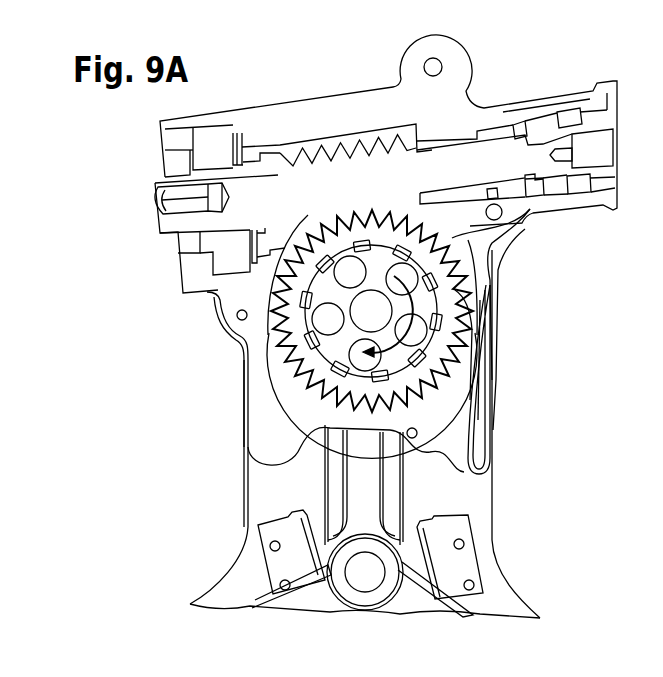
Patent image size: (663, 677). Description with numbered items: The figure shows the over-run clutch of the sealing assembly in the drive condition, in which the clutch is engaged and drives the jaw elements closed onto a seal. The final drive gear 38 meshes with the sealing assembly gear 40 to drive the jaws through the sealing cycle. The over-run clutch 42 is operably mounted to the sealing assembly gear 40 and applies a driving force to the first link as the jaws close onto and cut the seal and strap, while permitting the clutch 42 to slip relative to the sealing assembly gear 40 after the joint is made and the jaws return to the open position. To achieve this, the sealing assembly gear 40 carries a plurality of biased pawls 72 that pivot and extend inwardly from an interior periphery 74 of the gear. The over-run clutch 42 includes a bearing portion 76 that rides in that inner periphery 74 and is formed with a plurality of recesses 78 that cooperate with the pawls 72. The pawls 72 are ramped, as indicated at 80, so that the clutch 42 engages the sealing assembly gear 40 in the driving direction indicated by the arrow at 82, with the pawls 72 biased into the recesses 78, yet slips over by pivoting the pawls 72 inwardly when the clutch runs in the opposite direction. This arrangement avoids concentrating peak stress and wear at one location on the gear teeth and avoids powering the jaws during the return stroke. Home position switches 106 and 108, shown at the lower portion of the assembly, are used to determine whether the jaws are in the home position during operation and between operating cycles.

The final drive gear 38 is at (302, 165).
The sealing assembly gear 40 is at (483, 266).
The over-run clutch 42 is at (458, 306).
The biased pawls 72 is at (313, 397).
The interior periphery 74 is at (512, 243).
The bearing portion 76 is at (440, 410).
The recesses 78 is at (272, 295).
The ramp 80 is at (277, 263).
The driving direction arrow 82 is at (450, 290).
The home position switch 106 is at (468, 555).
The home position switch 108 is at (287, 560).